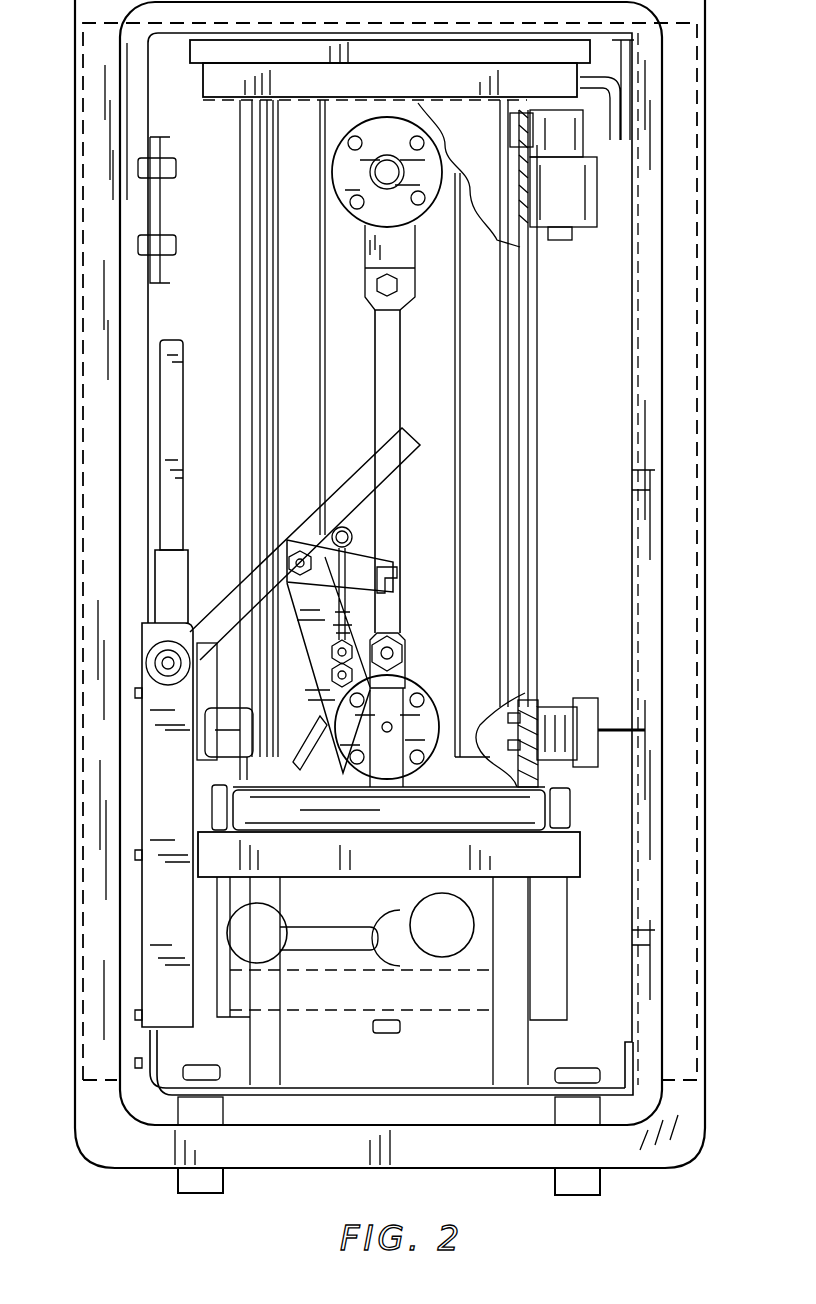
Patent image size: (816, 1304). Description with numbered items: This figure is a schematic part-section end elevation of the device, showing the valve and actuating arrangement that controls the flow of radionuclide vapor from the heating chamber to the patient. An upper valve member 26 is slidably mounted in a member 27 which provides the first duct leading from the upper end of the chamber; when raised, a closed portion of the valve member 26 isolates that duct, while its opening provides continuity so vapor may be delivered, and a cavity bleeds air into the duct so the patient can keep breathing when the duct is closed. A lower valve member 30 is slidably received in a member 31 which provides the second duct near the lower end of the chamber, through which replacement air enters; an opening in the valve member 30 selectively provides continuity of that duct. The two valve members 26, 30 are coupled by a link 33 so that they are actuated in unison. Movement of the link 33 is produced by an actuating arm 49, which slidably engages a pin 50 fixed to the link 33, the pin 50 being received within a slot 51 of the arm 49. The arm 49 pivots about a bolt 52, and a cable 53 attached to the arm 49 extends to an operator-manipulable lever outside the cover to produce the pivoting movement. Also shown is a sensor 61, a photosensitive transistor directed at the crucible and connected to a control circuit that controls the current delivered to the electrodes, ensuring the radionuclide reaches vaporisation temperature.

The valve member 26 is at (405, 255).
The member 27 is at (428, 200).
The valve member 30 is at (405, 665).
The member 31 is at (420, 760).
The link 33 is at (402, 392).
The actuating arm 49 is at (400, 503).
The pin 50 is at (395, 567).
The slot 51 is at (397, 590).
The bolt 52 is at (295, 540).
The cable 53 is at (320, 633).
The sensor 61 is at (558, 703).